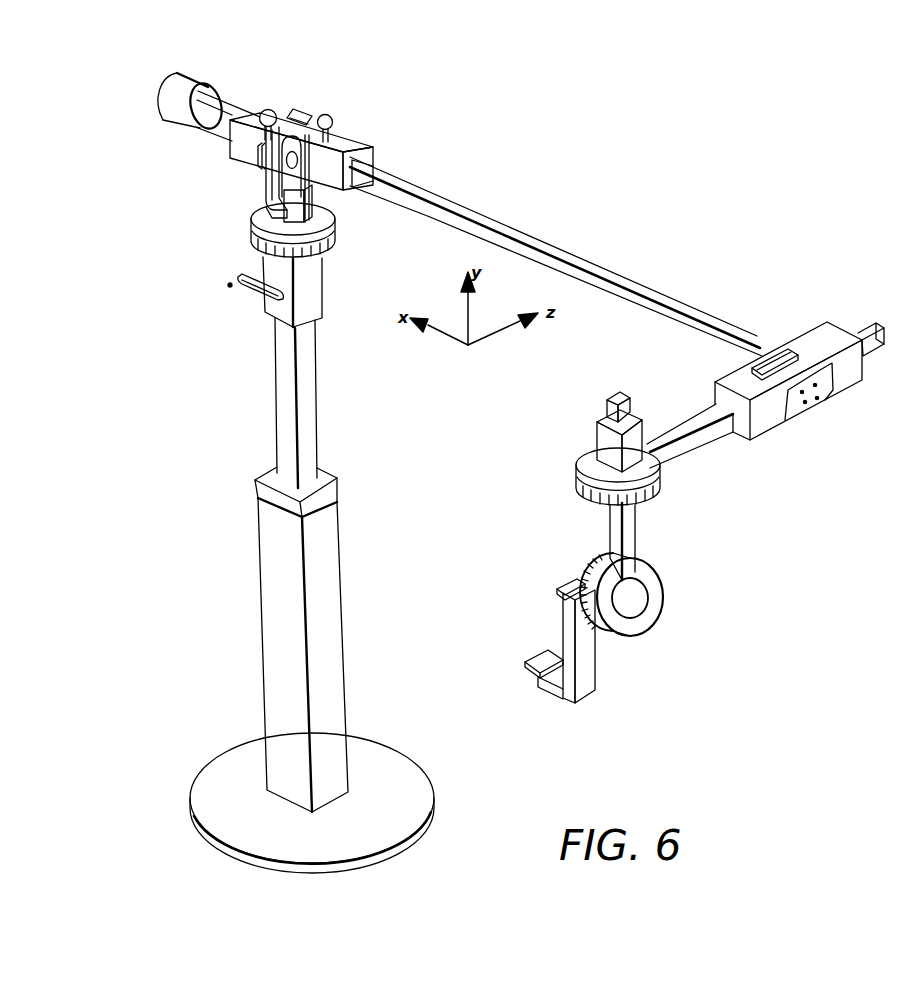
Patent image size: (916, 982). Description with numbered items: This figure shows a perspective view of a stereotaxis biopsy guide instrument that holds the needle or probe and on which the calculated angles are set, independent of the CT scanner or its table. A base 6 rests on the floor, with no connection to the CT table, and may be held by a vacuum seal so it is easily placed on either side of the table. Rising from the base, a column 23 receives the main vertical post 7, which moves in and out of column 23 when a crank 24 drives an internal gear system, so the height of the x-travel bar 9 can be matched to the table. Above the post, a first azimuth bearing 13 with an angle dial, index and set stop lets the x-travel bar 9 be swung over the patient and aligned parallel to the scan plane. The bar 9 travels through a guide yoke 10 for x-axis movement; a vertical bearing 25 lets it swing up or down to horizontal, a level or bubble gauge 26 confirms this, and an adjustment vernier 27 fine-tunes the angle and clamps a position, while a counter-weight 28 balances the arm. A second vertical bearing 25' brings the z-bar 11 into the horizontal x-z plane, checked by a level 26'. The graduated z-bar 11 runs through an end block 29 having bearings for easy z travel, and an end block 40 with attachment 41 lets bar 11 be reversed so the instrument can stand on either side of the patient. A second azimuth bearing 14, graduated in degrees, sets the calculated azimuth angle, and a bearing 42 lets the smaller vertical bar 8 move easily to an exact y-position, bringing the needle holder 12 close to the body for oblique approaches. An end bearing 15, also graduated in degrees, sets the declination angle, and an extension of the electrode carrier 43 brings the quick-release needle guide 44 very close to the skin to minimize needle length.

The base 6 is at (400, 763).
The main vertical post 7 is at (308, 417).
The smaller vertical bar 8 is at (635, 535).
The x-travel bar 9 is at (678, 303).
The guide yoke 10 is at (348, 142).
The z-bar 11 is at (700, 438).
The needle holder 12 is at (560, 597).
The first azimuth bearing 13 is at (255, 247).
The second azimuth bearing 14 is at (588, 455).
The end bearing 15 is at (607, 640).
The column 23 is at (258, 618).
The crank 24 is at (257, 290).
The vertical bearing 25 is at (226, 192).
The second vertical bearing 25' is at (372, 178).
The level or bubble gauge 26 is at (297, 96).
The level 26' is at (777, 335).
The adjustment vernier 27 is at (328, 112).
The counter-weight 28 is at (180, 78).
The end block 29 is at (823, 327).
The end block 40 is at (850, 380).
The attachment 41 is at (815, 397).
The bearing 42 is at (595, 428).
The electrode carrier extension 43 is at (558, 697).
The quick-release needle guide 44 is at (530, 672).